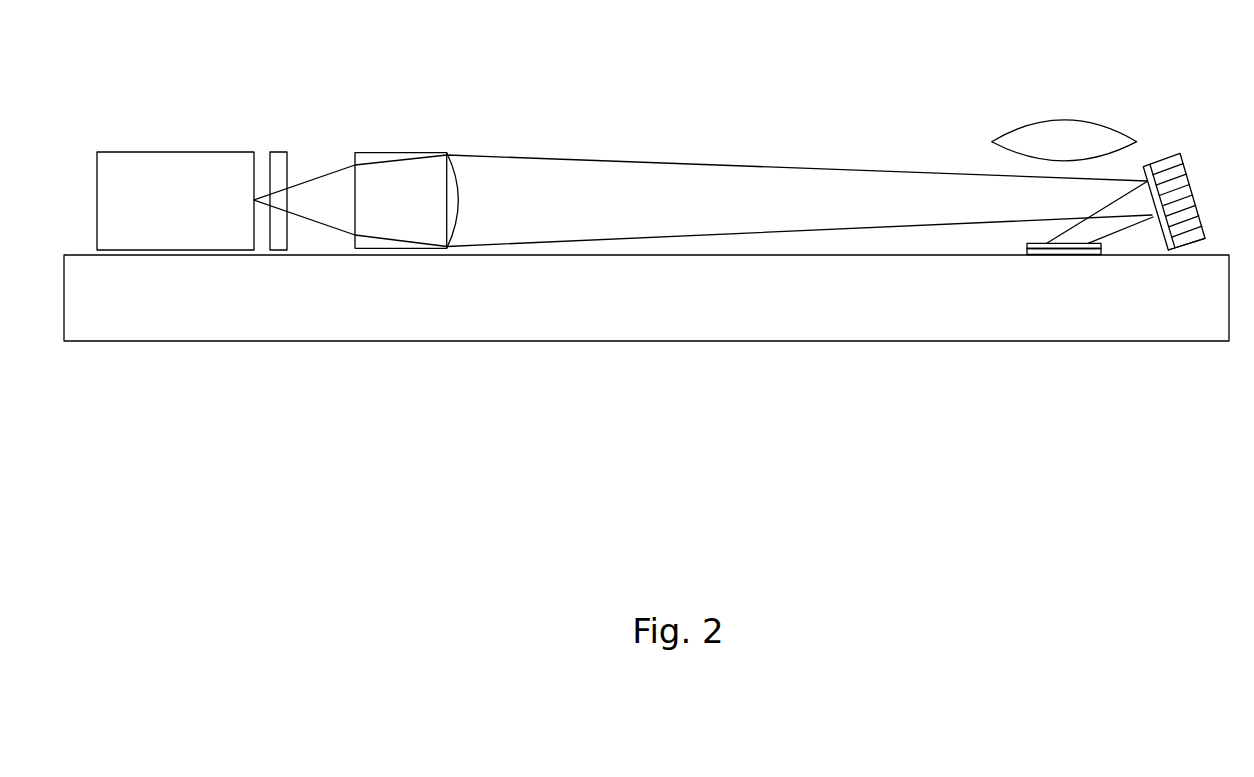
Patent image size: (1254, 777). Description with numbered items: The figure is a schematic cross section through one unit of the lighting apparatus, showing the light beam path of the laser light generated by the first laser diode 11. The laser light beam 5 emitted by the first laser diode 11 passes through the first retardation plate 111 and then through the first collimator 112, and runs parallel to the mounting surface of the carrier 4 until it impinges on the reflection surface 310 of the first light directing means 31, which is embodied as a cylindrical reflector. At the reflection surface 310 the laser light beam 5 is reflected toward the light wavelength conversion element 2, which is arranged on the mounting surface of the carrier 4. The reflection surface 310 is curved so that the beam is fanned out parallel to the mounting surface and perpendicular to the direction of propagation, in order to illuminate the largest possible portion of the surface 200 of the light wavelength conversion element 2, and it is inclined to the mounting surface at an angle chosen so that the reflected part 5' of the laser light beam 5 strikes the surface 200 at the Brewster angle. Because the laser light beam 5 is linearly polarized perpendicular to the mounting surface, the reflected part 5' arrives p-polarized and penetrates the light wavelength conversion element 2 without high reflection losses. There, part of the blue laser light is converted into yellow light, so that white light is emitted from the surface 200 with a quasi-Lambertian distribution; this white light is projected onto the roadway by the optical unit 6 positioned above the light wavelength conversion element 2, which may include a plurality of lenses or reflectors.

The light wavelength conversion element 2 is at (1067, 254).
The carrier 4 is at (542, 315).
The laser light beam 5 is at (703, 165).
The reflected part of the laser light beam 5' is at (1019, 166).
The optical unit 6 is at (1068, 133).
The first laser diode 11 is at (176, 162).
The first light directing means 31 is at (1170, 157).
The first retardation plate 111 is at (278, 160).
The first collimator 112 is at (372, 160).
The surface of the light wavelength conversion element 200 is at (1037, 254).
The reflection surface 310 is at (1163, 344).